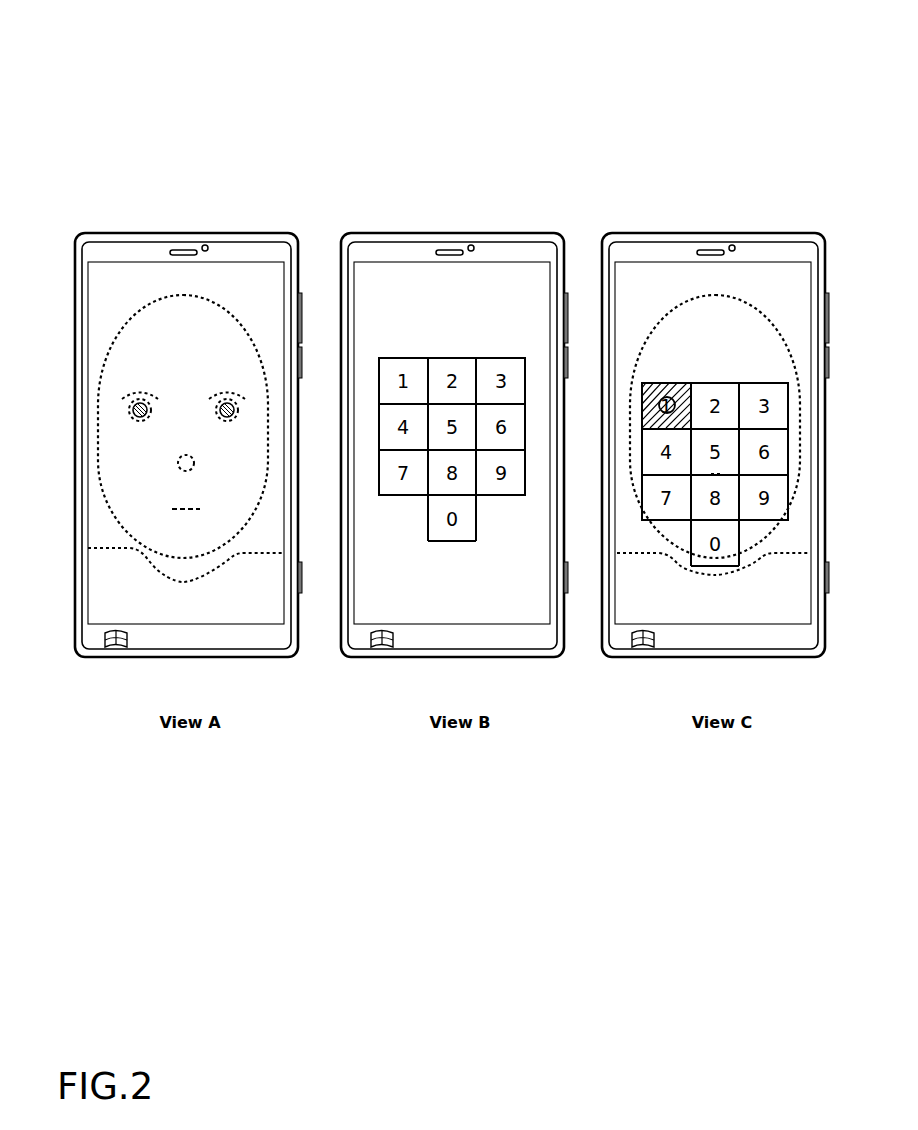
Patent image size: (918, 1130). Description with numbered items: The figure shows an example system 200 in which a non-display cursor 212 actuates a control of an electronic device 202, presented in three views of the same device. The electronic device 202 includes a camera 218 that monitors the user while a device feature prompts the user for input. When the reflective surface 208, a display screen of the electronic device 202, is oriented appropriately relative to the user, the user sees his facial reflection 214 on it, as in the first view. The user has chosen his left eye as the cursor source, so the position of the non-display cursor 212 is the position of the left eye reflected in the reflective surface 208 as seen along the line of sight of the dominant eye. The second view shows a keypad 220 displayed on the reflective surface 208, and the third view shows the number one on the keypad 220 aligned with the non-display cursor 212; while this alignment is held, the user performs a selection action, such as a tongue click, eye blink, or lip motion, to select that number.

The system 200 is at (716, 94).
The electronic device 202 is at (215, 658).
The reflective surface 208 is at (270, 305).
The non-display cursor 212 is at (140, 410).
The facial reflection 214 is at (143, 273).
The camera 218 is at (204, 244).
The keypad 220 is at (485, 515).